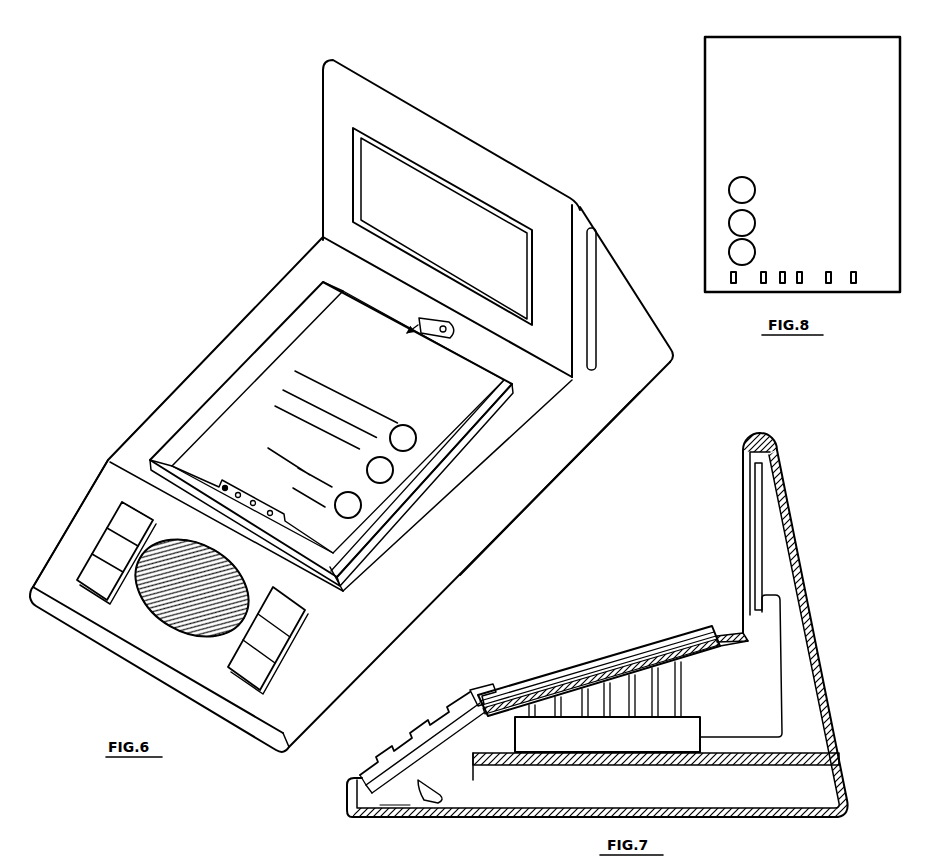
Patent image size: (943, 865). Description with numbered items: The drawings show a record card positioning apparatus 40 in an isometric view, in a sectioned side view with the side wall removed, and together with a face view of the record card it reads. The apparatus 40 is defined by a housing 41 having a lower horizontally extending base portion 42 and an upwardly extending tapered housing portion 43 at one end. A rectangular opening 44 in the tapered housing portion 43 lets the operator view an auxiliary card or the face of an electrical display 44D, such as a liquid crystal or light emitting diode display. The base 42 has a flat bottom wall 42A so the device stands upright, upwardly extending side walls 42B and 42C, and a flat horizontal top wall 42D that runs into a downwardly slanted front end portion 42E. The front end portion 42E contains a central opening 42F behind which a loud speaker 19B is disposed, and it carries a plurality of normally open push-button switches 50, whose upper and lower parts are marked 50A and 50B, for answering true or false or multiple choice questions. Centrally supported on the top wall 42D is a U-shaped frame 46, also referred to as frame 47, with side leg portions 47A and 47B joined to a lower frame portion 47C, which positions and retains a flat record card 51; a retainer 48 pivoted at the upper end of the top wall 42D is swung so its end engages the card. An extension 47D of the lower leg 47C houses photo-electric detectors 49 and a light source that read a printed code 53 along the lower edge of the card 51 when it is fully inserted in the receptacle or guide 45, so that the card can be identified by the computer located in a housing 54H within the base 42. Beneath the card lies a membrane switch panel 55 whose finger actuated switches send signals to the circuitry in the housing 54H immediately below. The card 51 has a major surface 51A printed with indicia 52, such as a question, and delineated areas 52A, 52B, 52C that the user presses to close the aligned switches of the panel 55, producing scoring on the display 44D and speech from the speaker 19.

In FIG. 6, the record card positioning apparatus 40 is at (188, 92).
In FIG. 6, the housing 41 is at (330, 58).
In FIG. 7, the housing 41 is at (745, 440).
In FIG. 6, the base portion 42 is at (262, 303).
In FIG. 6, the bottom wall 42A is at (493, 540).
In FIG. 6, the side wall 42B is at (450, 553).
In FIG. 6, the side wall 42C is at (120, 447).
In FIG. 6, the top wall 42D is at (507, 428).
In FIG. 6, the front end portion 42E is at (100, 493).
In FIG. 6, the central opening 42F is at (157, 620).
In FIG. 6, the tapered housing portion 43 is at (607, 200).
In FIG. 7, the tapered housing portion 43 is at (783, 494).
In FIG. 6, the rectangular opening 44 is at (370, 155).
In FIG. 7, the electrical display 44D is at (756, 510).
In FIG. 6, the receptacle or guide 45 is at (590, 270).
In FIG. 6, the U-shaped frame 46 is at (227, 377).
In FIG. 6, the U-shaped frame 47 is at (193, 407).
In FIG. 7, the U-shaped frame 47 is at (523, 678).
In FIG. 6, the side leg portion 47A is at (315, 293).
In FIG. 6, the side leg portion 47B is at (457, 453).
In FIG. 6, the lower frame portion 47C is at (330, 567).
In FIG. 6, the extension 47D is at (248, 487).
In FIG. 7, the extension 47D is at (490, 692).
In FIG. 6, the retainer 48 is at (447, 340).
In FIG. 6, the photo-electric detectors 49 is at (226, 486).
In FIG. 6, the push-button switches 50 is at (80, 567).
In FIG. 7, the push-button switches 50 is at (400, 745).
In FIG. 6, the key top 50A is at (118, 520).
In FIG. 7, the key bottom 50B is at (468, 835).
In FIG. 6, the record card 51 is at (338, 385).
In FIG. 7, the record card 51 is at (720, 636).
In FIG. 8, the record card 51 is at (705, 98).
In FIG. 8, the major surface 51A is at (787, 168).
In FIG. 8, the printed indicia 52 is at (748, 63).
In FIG. 8, the delineated area 52A is at (728, 185).
In FIG. 8, the delineated area 52B is at (730, 220).
In FIG. 8, the delineated area 52C is at (730, 248).
In FIG. 8, the printed code 53 is at (733, 283).
In FIG. 7, the housing 54H is at (594, 746).
In FIG. 7, the membrane switch panel 55 is at (652, 663).
In FIG. 7, the speaker 19 is at (428, 800).
In FIG. 6, the loud speaker 19B is at (150, 587).